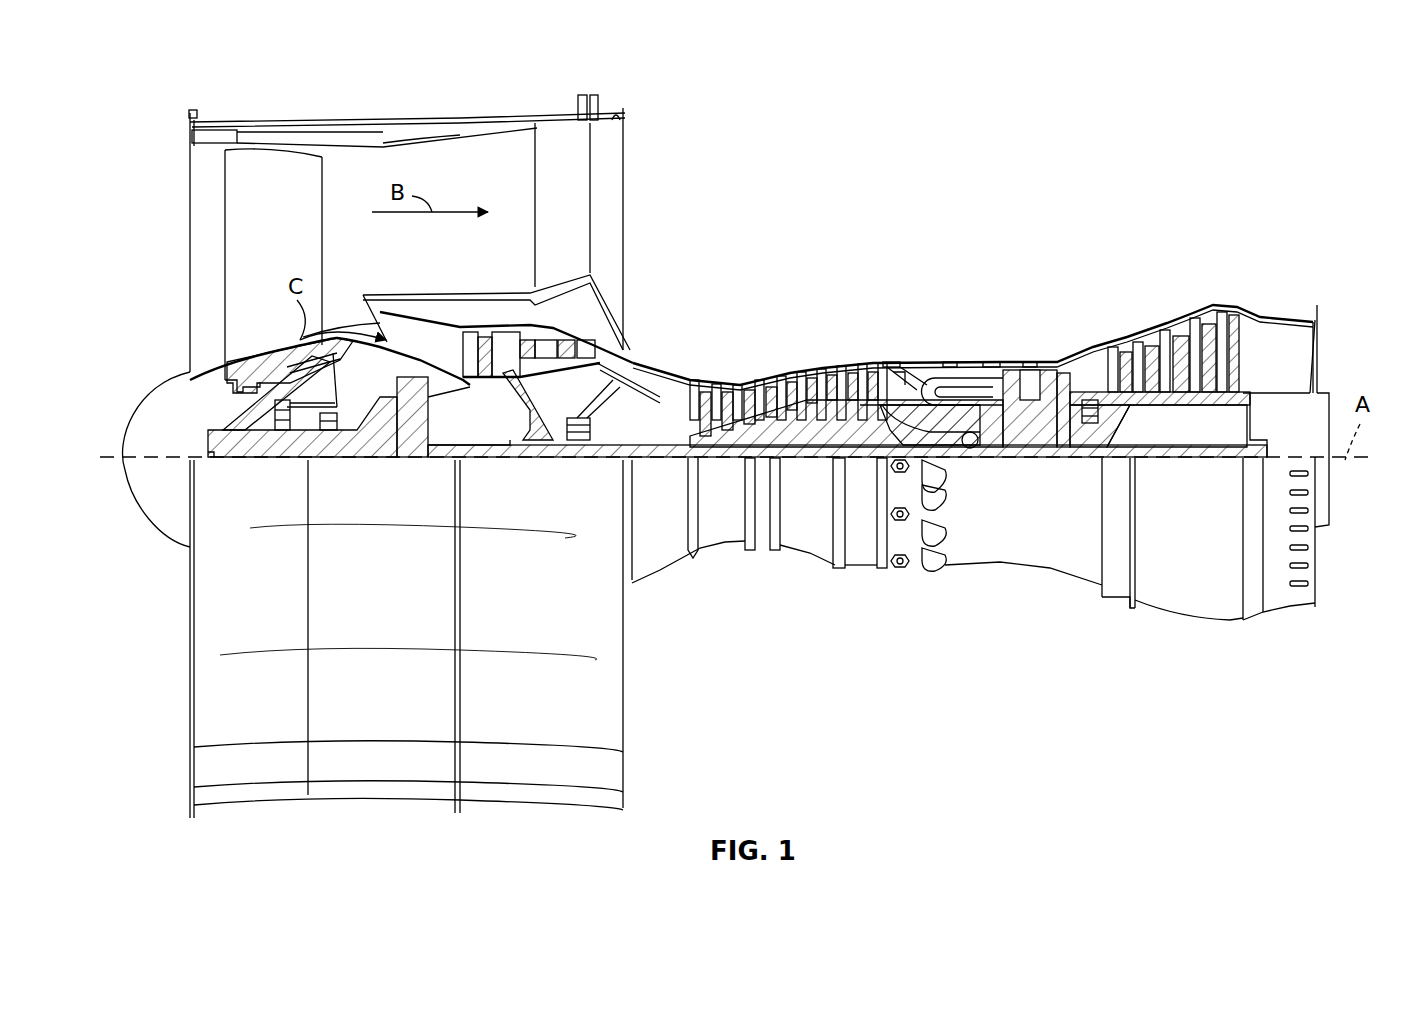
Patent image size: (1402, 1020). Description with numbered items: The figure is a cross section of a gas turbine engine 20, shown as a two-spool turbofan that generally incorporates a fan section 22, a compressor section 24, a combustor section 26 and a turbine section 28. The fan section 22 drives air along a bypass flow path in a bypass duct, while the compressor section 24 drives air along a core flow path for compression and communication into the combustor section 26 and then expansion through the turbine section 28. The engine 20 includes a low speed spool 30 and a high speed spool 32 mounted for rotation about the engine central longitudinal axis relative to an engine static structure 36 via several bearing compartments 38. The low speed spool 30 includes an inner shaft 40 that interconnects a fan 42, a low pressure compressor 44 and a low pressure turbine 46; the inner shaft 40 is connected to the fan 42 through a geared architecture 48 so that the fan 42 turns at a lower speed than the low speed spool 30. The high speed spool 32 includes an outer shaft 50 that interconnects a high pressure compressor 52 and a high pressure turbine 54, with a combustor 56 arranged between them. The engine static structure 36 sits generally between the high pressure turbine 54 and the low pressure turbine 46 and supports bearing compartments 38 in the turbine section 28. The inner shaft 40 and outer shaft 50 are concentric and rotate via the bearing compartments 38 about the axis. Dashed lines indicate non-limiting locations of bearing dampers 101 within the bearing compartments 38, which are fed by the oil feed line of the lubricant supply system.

The gas turbine engine 20 is at (1200, 128).
The fan section 22 is at (290, 118).
The compressor section 24 is at (788, 283).
The combustor section 26 is at (968, 263).
The turbine section 28 is at (1107, 257).
The low speed spool 30 is at (827, 463).
The high speed spool 32 is at (870, 417).
The engine static structure 36 is at (863, 568).
The bearing compartments 38 is at (285, 428).
The inner shaft 40 is at (643, 460).
The fan 42 is at (282, 252).
The low pressure compressor 44 is at (545, 347).
The low pressure turbine 46 is at (1180, 327).
The geared architecture 48 is at (415, 440).
The outer shaft 50 is at (978, 433).
The high pressure compressor 52 is at (773, 423).
The high pressure turbine 54 is at (1030, 358).
The combustor 56 is at (953, 383).
The bearing damper 101 is at (257, 453).